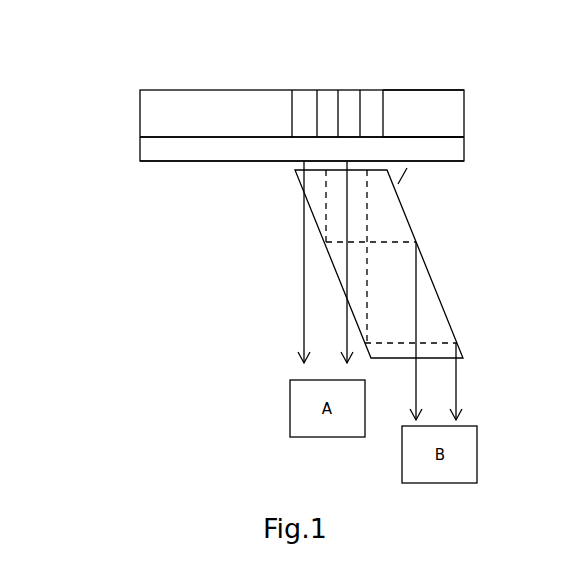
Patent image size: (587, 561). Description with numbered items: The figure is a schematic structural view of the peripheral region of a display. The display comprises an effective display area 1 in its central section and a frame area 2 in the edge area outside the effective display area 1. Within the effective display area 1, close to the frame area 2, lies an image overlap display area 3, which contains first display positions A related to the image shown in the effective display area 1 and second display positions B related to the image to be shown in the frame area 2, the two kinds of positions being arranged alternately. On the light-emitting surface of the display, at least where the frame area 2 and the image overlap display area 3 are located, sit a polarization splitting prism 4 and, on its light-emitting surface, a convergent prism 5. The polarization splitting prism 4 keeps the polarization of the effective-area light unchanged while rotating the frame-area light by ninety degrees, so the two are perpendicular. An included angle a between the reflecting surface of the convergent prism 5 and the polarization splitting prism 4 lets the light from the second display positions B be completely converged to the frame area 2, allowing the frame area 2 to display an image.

The effective display area 1 is at (160, 90).
The frame area 2 is at (412, 90).
The image overlap display area 3 is at (317, 90).
The polarization splitting prism 4 is at (168, 163).
The convergent prism 5 is at (342, 255).
The included angle a is at (407, 182).